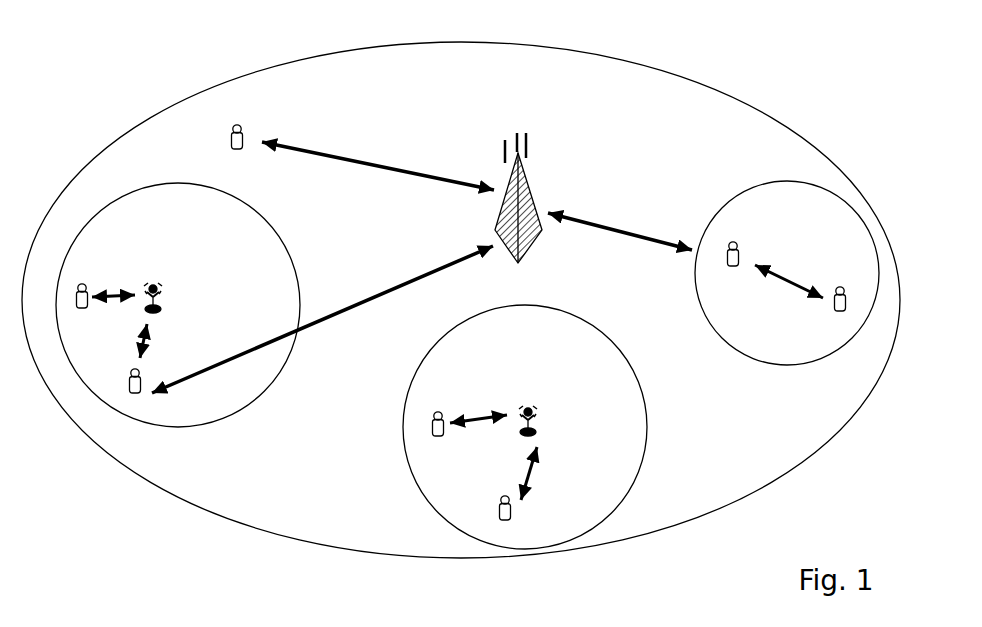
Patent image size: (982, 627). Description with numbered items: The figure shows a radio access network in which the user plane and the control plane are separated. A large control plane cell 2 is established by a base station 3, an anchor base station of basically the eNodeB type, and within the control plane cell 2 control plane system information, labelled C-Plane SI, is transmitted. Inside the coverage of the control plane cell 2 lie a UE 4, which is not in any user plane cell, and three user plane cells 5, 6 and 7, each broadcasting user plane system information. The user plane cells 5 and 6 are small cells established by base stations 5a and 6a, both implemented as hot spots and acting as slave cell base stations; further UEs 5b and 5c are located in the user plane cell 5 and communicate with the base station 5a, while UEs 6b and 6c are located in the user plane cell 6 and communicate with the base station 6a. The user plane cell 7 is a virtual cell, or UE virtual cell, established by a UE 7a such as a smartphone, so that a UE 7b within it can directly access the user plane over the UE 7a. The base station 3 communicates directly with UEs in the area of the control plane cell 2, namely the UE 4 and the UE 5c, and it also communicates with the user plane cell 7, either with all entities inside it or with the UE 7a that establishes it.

The control plane cell 2 is at (648, 58).
The base station 3 is at (506, 186).
The UE 4 is at (240, 122).
The user plane cell 5 is at (160, 183).
The base station 5a is at (166, 304).
The UE 5b is at (82, 282).
The UE 5c is at (128, 386).
The user plane cell 6 is at (541, 306).
The base station 6a is at (545, 402).
The UE 6b is at (440, 404).
The UE 6c is at (515, 522).
The user plane cell 7 is at (761, 183).
The UE 7a is at (740, 235).
The UE 7b is at (830, 312).